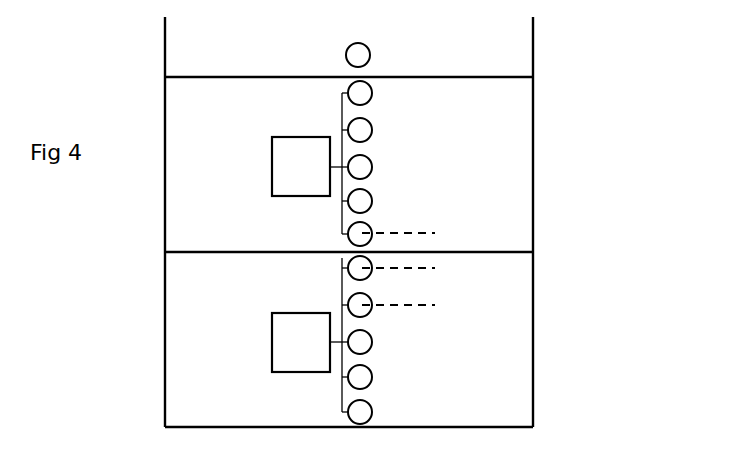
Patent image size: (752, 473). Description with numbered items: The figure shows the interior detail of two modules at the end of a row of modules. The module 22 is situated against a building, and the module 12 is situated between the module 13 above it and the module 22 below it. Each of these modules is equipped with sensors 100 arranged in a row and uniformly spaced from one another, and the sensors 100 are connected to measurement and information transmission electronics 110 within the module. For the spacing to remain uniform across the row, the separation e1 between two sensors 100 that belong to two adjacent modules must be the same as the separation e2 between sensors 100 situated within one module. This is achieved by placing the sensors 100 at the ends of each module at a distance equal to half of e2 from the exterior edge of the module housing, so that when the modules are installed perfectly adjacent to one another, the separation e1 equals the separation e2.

The module 13 is at (507, 55).
The module 12 is at (524, 96).
The module 22 is at (524, 402).
The sensors 100 is at (378, 233).
The measurement and information transmission electronics 110 is at (272, 196).
The separation e1 is at (440, 236).
The separation e2 is at (440, 271).